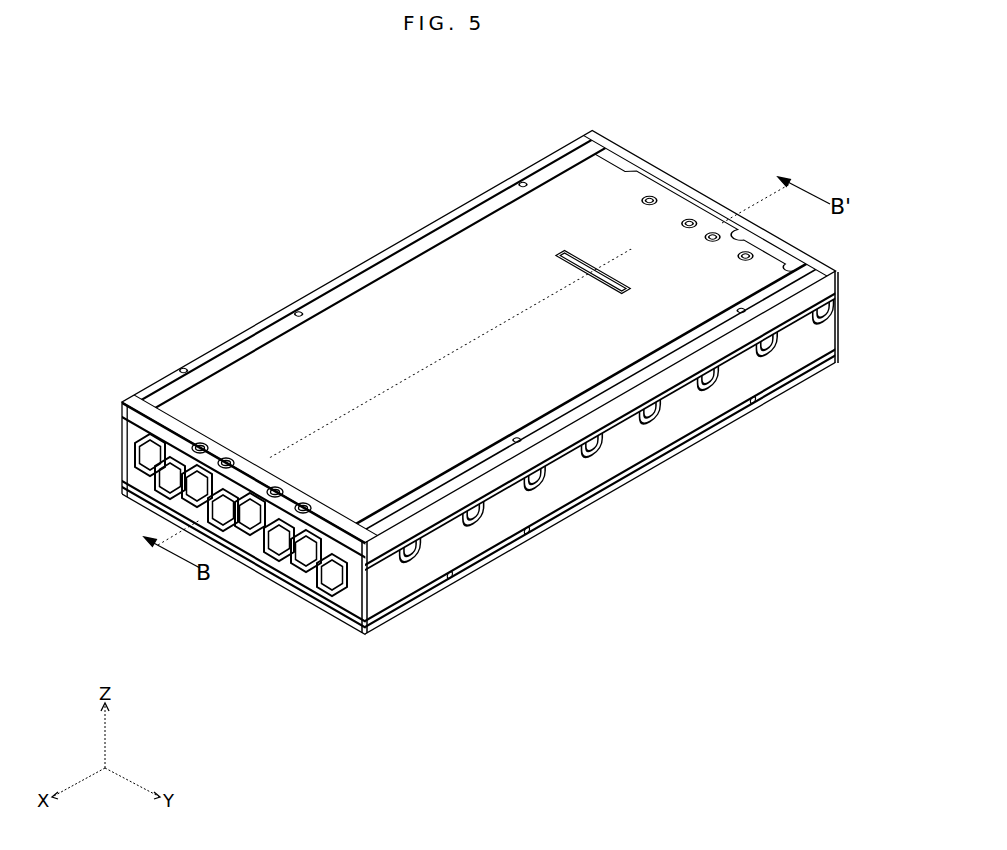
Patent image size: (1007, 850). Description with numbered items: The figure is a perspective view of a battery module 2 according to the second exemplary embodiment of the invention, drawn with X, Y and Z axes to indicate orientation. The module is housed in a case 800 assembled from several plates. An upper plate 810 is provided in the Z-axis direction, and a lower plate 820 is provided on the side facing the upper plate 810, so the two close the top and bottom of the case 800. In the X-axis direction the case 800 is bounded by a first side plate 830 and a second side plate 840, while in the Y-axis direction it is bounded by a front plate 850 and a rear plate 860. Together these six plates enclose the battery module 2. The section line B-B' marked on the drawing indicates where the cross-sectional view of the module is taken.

The battery module 2 is at (300, 174).
The case 800 is at (224, 327).
The upper plate 810 is at (485, 212).
The lower plate 820 is at (592, 503).
The first side plate 830 is at (258, 575).
The second side plate 840 is at (665, 185).
The front plate 850 is at (647, 458).
The rear plate 860 is at (330, 278).